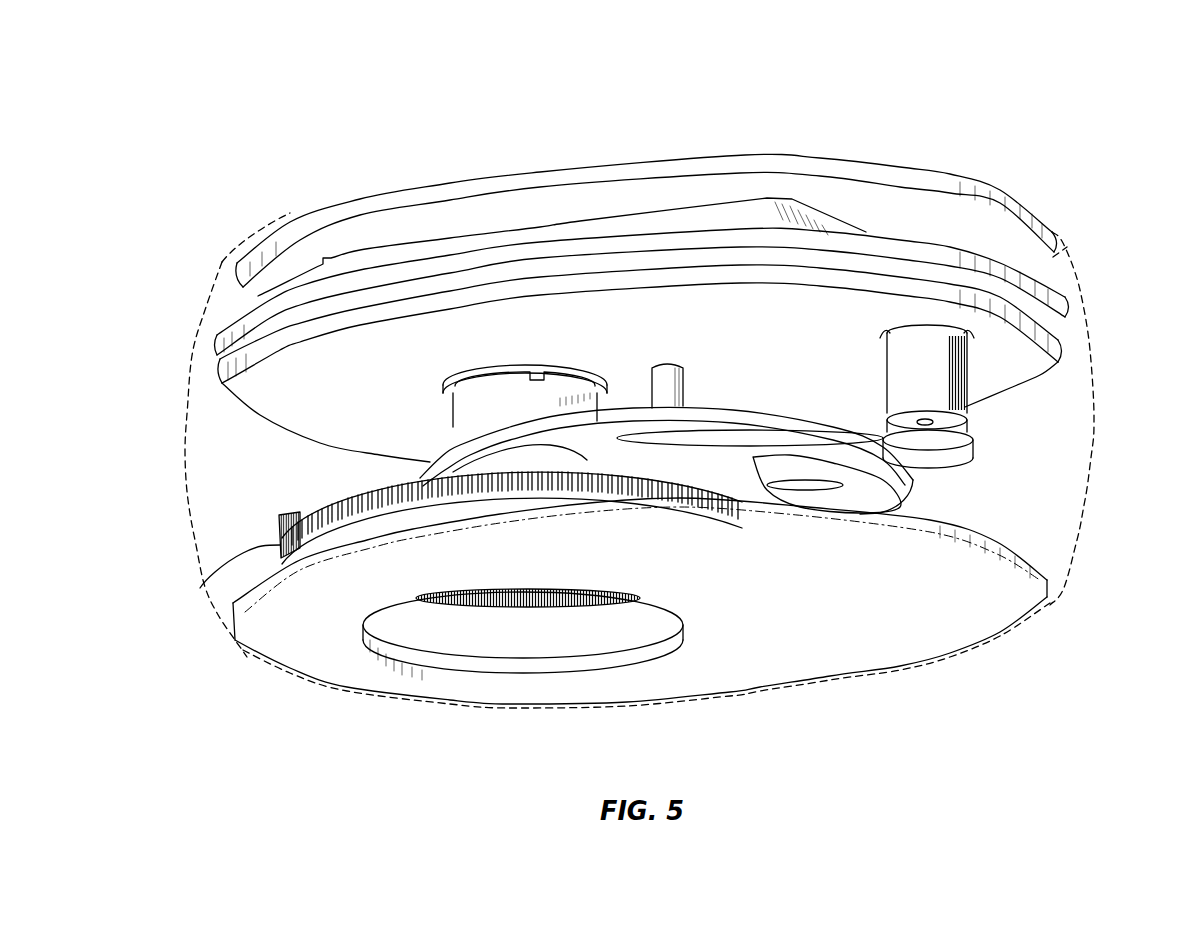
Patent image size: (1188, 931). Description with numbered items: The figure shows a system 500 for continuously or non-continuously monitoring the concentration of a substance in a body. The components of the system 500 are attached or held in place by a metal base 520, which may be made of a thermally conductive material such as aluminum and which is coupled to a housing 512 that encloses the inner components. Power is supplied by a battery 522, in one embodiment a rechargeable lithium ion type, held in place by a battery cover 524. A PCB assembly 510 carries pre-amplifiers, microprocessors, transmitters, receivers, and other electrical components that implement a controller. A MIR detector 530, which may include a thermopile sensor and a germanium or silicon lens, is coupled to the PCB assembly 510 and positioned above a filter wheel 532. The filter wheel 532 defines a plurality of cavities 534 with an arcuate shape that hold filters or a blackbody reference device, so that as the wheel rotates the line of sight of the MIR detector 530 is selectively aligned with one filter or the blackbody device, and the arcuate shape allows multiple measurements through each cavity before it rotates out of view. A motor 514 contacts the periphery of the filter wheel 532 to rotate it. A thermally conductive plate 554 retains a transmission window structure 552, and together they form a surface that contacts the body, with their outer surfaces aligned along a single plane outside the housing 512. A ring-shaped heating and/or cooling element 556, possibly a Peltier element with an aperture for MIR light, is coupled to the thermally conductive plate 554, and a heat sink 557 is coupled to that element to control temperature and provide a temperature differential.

The system 500 is at (222, 82).
The PCB assembly 510 is at (245, 365).
The housing 512 is at (1097, 417).
The motor 514 is at (902, 402).
The metal base 520 is at (227, 330).
The battery 522 is at (428, 253).
The battery cover 524 is at (332, 215).
The MIR detector 530 is at (470, 423).
The filter wheel 532 is at (422, 463).
The plurality of cavities 534 is at (640, 440).
The transmission window structure 552 is at (527, 643).
The thermally conductive plate 554 is at (342, 670).
The heating and/or cooling element 556 is at (313, 547).
The heat sink 557 is at (232, 586).